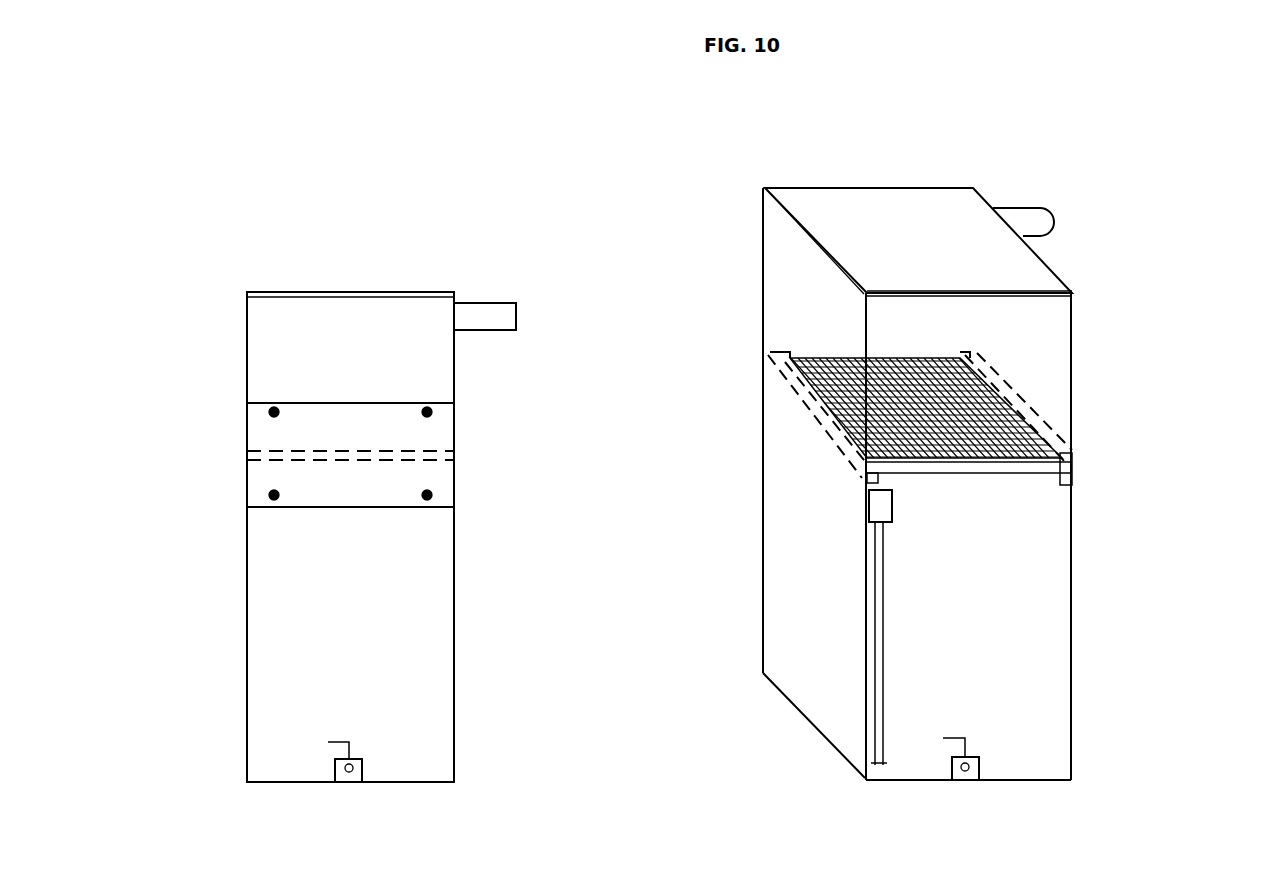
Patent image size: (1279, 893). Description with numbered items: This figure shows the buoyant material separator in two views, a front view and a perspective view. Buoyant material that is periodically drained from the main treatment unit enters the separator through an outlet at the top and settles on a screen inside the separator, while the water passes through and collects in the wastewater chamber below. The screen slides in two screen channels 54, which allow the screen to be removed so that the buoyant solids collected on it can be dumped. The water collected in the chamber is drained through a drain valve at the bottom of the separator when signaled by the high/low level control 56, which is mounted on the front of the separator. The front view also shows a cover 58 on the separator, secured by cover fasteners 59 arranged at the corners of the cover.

The screen channels 54 is at (822, 437).
The high/low level control 56 is at (876, 780).
The cover 58 is at (257, 418).
The cover fasteners 59 is at (270, 494).